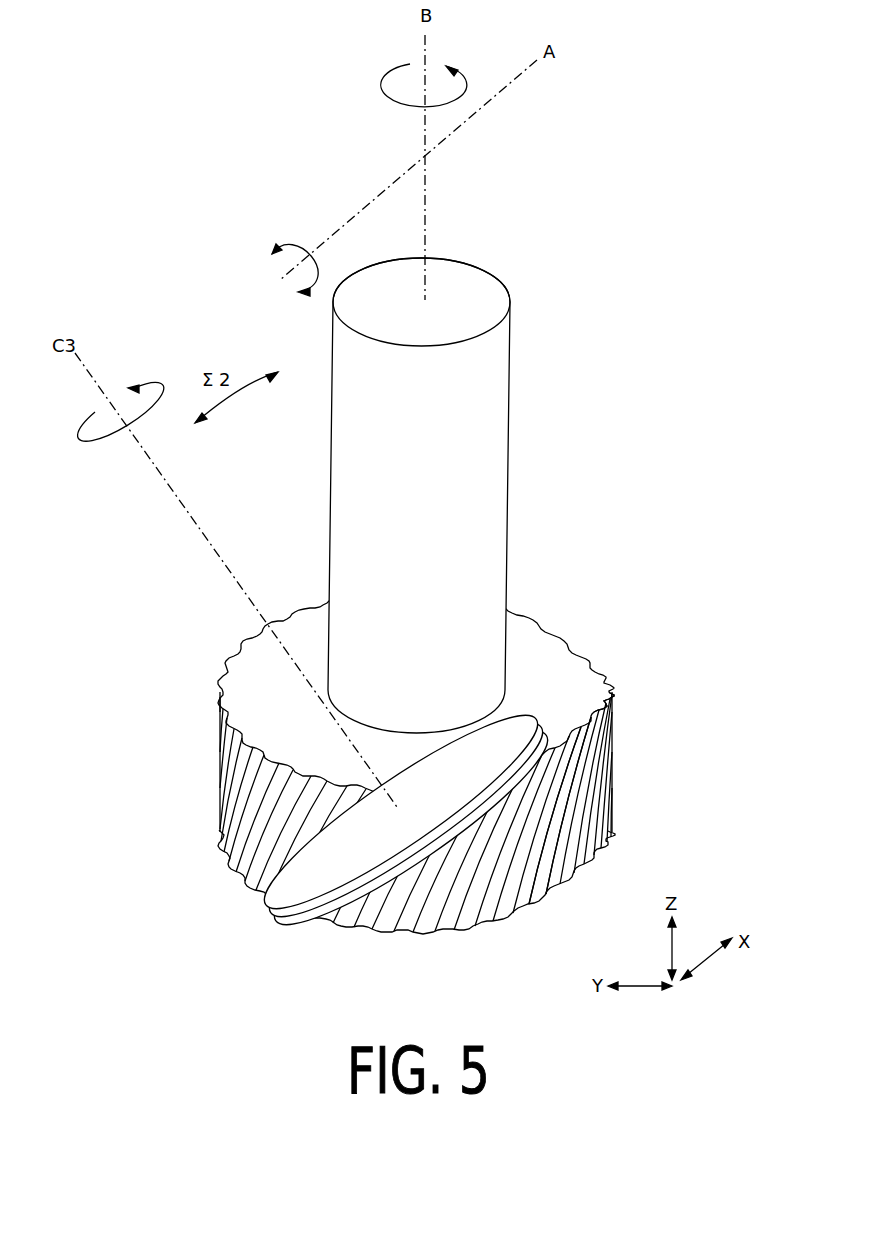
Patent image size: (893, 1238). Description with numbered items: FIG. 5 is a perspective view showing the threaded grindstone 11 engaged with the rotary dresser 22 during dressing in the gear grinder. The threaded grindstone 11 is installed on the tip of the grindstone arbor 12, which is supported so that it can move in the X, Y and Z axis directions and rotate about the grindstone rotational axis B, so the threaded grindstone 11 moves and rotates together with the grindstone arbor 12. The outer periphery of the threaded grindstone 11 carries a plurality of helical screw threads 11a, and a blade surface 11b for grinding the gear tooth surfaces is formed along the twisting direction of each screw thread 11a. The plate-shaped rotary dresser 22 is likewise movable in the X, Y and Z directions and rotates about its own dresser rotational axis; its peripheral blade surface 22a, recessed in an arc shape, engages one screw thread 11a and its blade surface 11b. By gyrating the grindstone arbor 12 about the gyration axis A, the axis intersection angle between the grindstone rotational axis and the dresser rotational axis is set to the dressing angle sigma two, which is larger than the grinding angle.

The threaded grindstone 11 is at (586, 637).
The screw thread 11a is at (610, 702).
The blade surface 11b is at (593, 798).
The grindstone arbor 12 is at (510, 395).
The rotary dresser 22 is at (300, 880).
The blade surface 22a is at (276, 916).